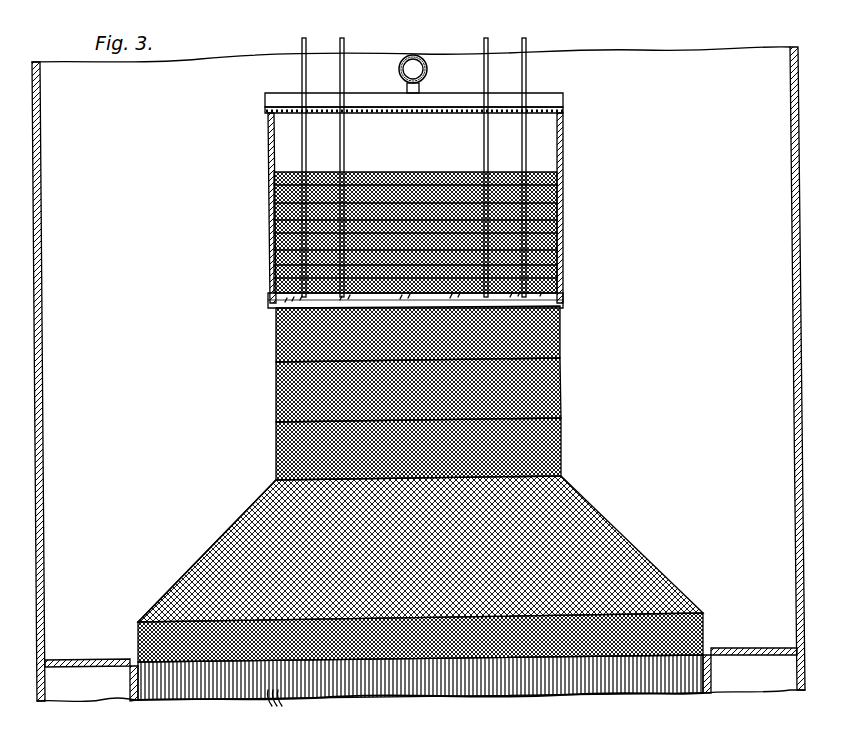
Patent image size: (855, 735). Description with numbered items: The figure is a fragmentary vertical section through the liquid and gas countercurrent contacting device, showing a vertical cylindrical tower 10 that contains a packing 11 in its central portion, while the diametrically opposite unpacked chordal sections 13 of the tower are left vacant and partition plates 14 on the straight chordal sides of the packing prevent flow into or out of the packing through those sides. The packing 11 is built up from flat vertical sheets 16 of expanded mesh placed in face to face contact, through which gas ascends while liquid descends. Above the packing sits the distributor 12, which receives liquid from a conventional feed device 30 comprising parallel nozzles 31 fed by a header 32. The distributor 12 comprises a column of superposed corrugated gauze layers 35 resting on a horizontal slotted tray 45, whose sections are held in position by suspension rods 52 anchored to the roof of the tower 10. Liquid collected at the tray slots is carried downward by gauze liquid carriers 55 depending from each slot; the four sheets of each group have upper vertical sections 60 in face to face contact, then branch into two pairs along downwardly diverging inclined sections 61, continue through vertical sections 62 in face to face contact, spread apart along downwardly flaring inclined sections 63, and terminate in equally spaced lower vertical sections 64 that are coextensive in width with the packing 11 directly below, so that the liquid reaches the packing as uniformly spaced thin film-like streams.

The tower 10 is at (727, 47).
The packing 11 is at (602, 697).
The distributor 12 is at (432, 296).
The chordal sections 13 is at (748, 668).
The partition plates 14 is at (712, 678).
The sheets 16 is at (284, 711).
The feed device 30 is at (433, 94).
The nozzles 31 is at (540, 113).
The header 32 is at (427, 70).
The gauze layers 35 is at (560, 210).
The tray 45 is at (560, 314).
The suspension rods 52 is at (342, 80).
The liquid carriers 55 is at (420, 539).
The upper vertical sections 60 is at (276, 341).
The inclined upper sections 61 is at (276, 396).
The vertical sections 62 is at (276, 452).
The inclined sections 63 is at (215, 545).
The lower vertical sections 64 is at (138, 640).